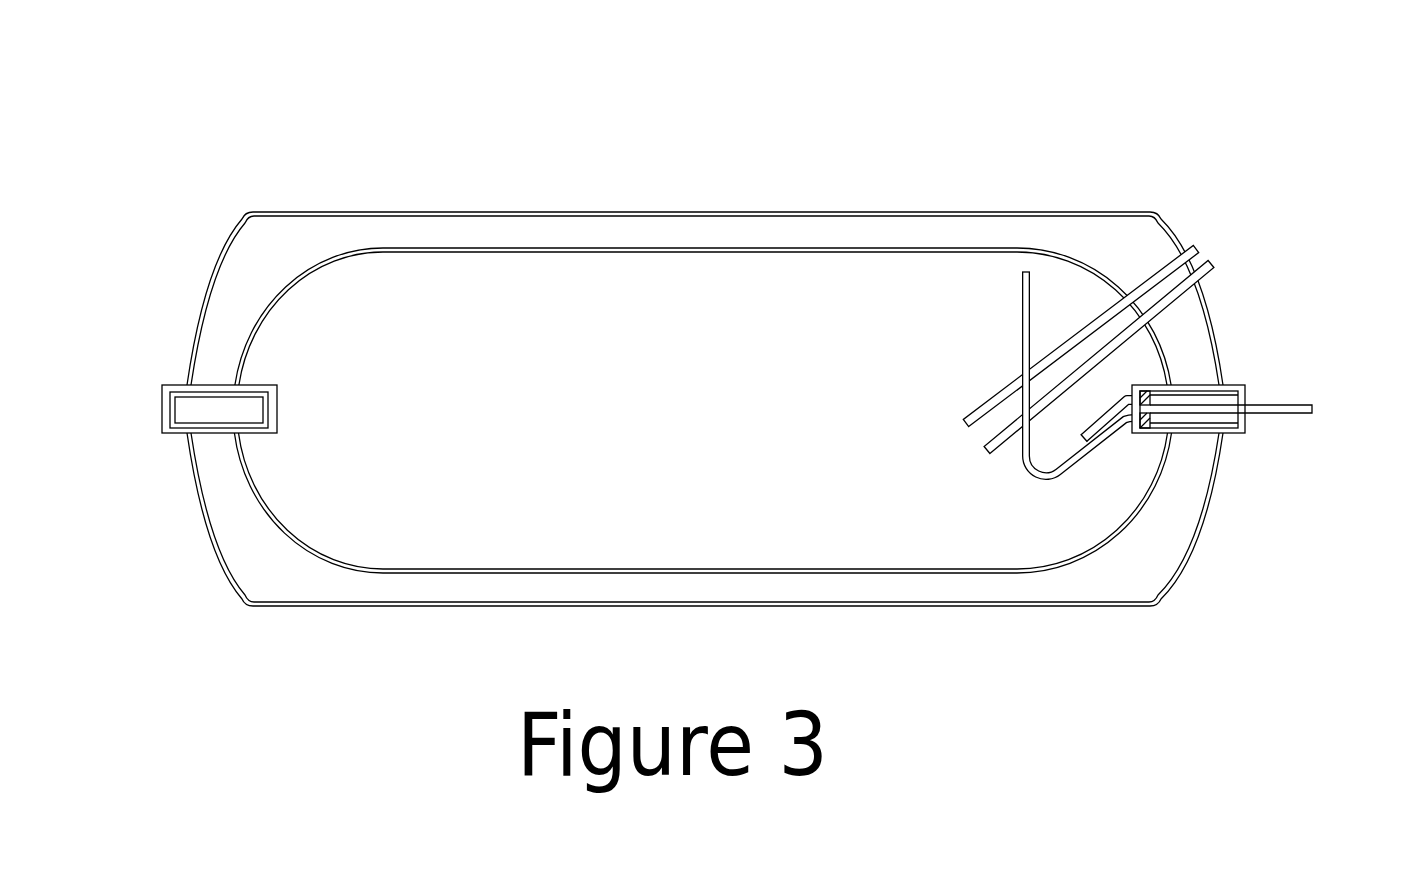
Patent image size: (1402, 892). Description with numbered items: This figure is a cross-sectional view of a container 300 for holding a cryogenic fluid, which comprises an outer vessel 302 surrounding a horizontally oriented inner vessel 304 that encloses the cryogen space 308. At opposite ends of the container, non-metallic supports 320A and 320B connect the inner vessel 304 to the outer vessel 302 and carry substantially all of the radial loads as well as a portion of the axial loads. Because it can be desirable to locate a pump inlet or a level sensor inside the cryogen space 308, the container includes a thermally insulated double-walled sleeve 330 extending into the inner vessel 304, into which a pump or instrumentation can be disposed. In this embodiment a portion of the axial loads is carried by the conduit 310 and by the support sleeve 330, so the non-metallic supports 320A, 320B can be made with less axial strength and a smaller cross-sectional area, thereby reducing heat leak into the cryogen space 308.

The container 300 is at (712, 345).
The outer vessel 302 is at (812, 213).
The inner vessel 304 is at (745, 250).
The cryogen space 308 is at (641, 416).
The conduit 310 is at (1268, 412).
The non-metallic support 320A is at (1190, 390).
The non-metallic support 320B is at (215, 388).
The double-walled sleeve 330 is at (984, 362).